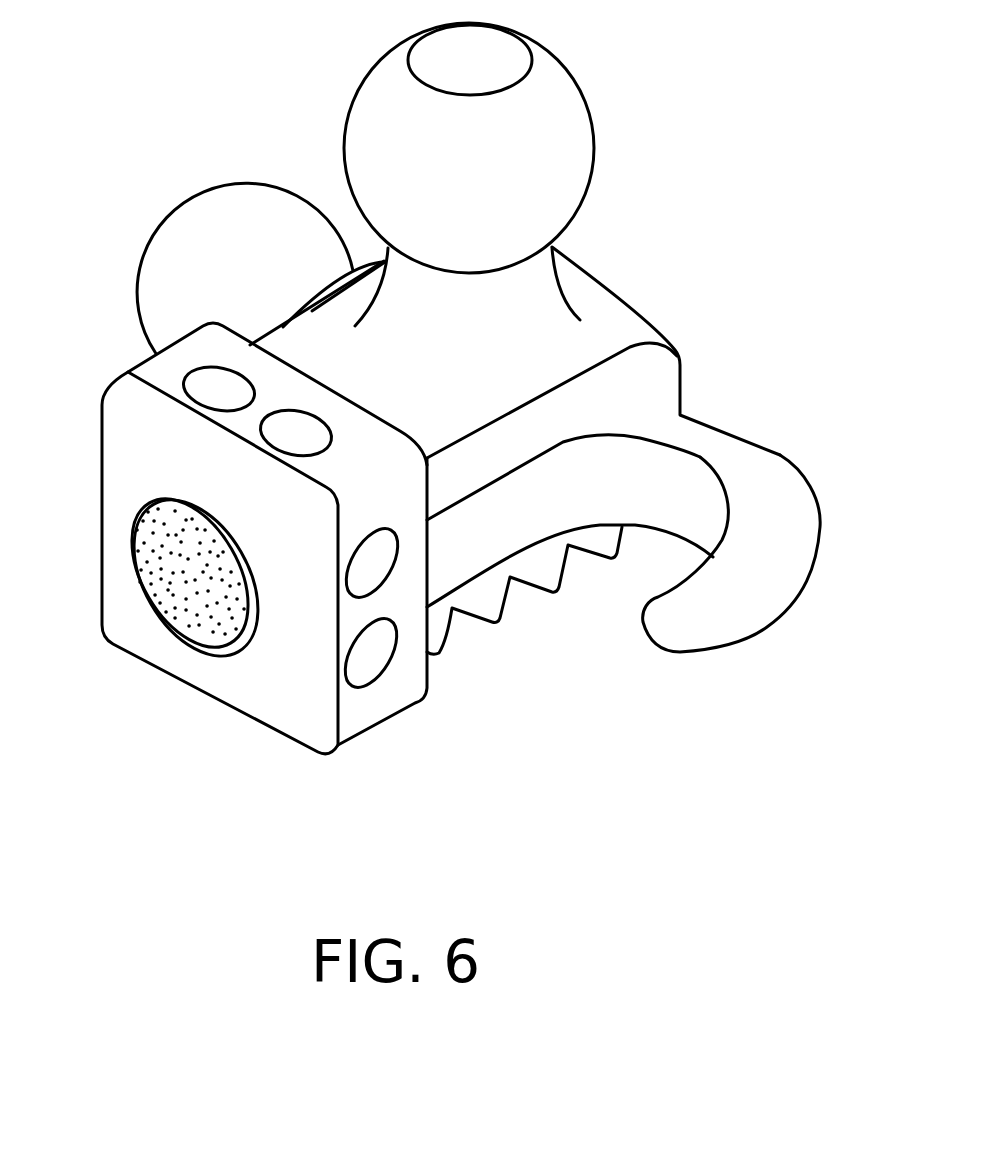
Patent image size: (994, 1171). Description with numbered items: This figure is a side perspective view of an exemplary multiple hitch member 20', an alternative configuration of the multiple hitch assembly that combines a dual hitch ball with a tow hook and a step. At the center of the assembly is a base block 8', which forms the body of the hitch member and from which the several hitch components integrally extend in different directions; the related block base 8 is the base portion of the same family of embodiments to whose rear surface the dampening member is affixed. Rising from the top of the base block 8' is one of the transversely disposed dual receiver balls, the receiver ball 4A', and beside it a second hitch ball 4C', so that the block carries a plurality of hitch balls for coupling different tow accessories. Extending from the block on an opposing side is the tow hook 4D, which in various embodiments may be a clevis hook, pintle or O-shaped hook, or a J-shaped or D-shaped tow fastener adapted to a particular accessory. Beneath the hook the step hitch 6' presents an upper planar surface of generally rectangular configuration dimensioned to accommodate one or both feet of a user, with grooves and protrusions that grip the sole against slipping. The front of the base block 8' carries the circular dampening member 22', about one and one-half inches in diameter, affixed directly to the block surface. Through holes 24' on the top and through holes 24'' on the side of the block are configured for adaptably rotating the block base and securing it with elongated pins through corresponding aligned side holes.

The receiver ball 4A' is at (495, 174).
The hitch ball 4C' is at (258, 256).
The tow hook 4D is at (747, 458).
The step hitch 6' is at (524, 590).
The base block 8 is at (515, 351).
The base block 8' is at (264, 538).
The multiple hitch member 20' is at (591, 369).
The dampening member 22' is at (163, 577).
The through holes 24' is at (197, 399).
The through holes 24'' is at (315, 652).